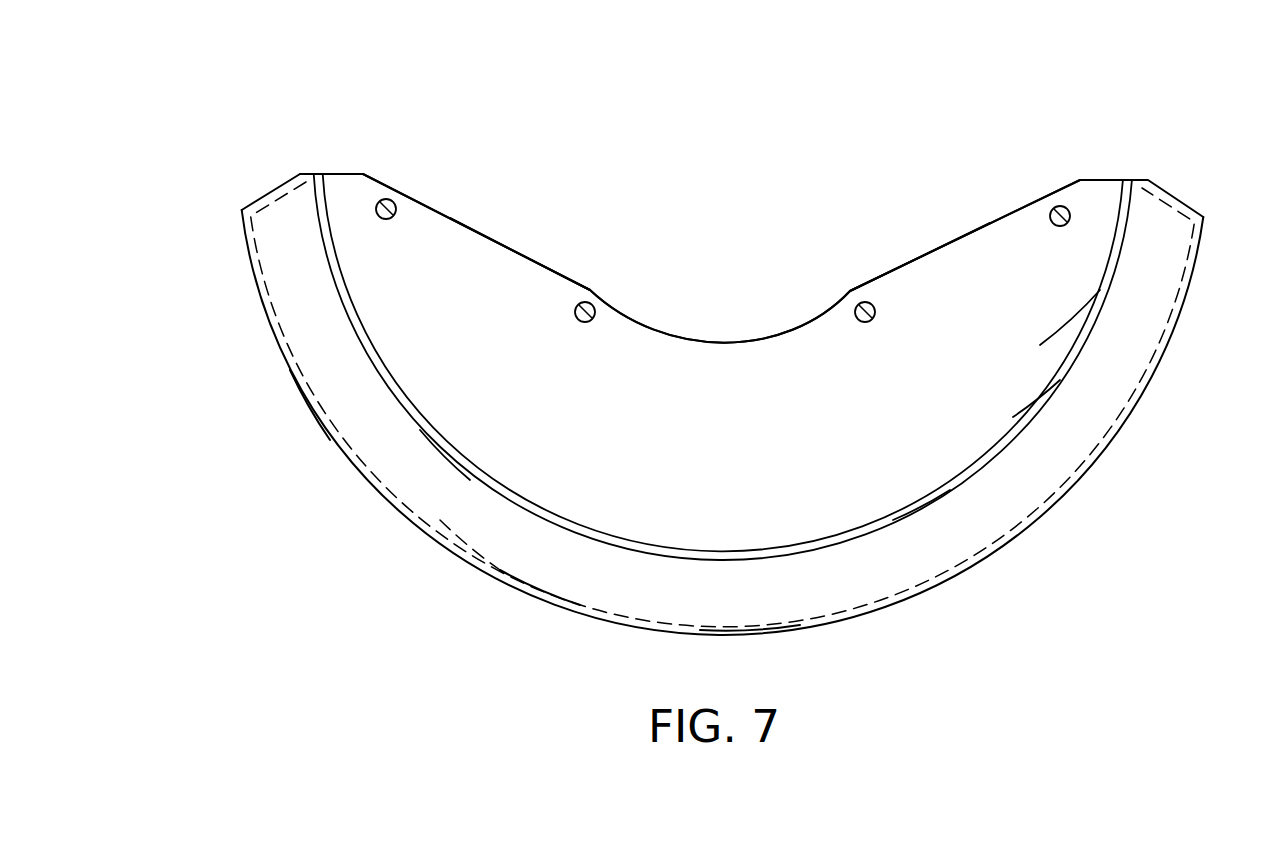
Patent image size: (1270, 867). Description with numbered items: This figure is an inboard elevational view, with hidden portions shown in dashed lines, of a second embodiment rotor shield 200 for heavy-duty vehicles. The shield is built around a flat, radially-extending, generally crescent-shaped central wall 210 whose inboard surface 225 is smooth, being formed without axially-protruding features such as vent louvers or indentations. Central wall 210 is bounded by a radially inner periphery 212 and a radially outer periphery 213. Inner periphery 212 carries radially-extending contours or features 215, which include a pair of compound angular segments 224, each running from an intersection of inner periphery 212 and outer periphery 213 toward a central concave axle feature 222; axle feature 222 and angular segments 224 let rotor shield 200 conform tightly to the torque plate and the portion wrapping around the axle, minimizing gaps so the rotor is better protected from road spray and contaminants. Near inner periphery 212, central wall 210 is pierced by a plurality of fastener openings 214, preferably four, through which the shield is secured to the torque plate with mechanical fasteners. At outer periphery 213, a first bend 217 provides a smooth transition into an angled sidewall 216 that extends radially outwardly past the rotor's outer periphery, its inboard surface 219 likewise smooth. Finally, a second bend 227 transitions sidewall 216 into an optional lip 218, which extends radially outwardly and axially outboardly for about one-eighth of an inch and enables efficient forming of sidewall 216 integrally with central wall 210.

The rotor shield 200 is at (222, 146).
The central wall 210 is at (1013, 417).
The radially inner periphery 212 is at (340, 174).
The radially outer periphery 213 is at (450, 447).
The fastener openings 214 is at (396, 206).
The radially-extending contours or features 215 is at (438, 190).
The angled sidewall 216 is at (540, 560).
The first bend 217 is at (893, 520).
The lip 218 is at (327, 422).
The inboard surface 219 is at (770, 587).
The central concave axle feature 222 is at (726, 340).
The compound angular segments 224 is at (505, 238).
The inboard surface 225 is at (1038, 343).
The second bend 227 is at (473, 555).